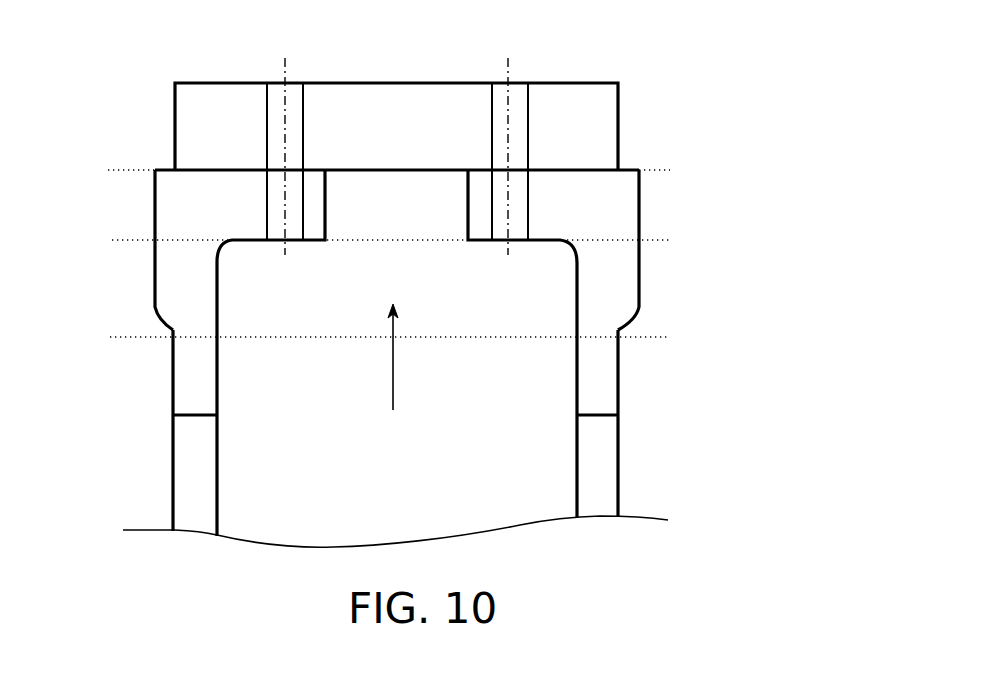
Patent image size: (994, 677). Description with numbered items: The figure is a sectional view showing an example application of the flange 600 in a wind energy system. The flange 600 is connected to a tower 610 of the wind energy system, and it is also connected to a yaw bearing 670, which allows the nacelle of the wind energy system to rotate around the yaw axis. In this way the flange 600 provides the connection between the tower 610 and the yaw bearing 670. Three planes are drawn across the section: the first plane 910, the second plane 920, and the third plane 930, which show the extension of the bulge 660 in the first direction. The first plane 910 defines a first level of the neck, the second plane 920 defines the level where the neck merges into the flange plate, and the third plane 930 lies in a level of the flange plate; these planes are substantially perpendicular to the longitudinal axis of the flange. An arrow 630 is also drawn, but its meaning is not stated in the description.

The flange 600 is at (481, 284).
The tower 610 is at (603, 487).
The flow direction arrow 630 is at (388, 352).
The bulge 660 is at (450, 358).
The yaw bearing 670 is at (598, 118).
The first plane 910 is at (351, 333).
The second plane 920 is at (351, 238).
The third plane 930 is at (351, 168).